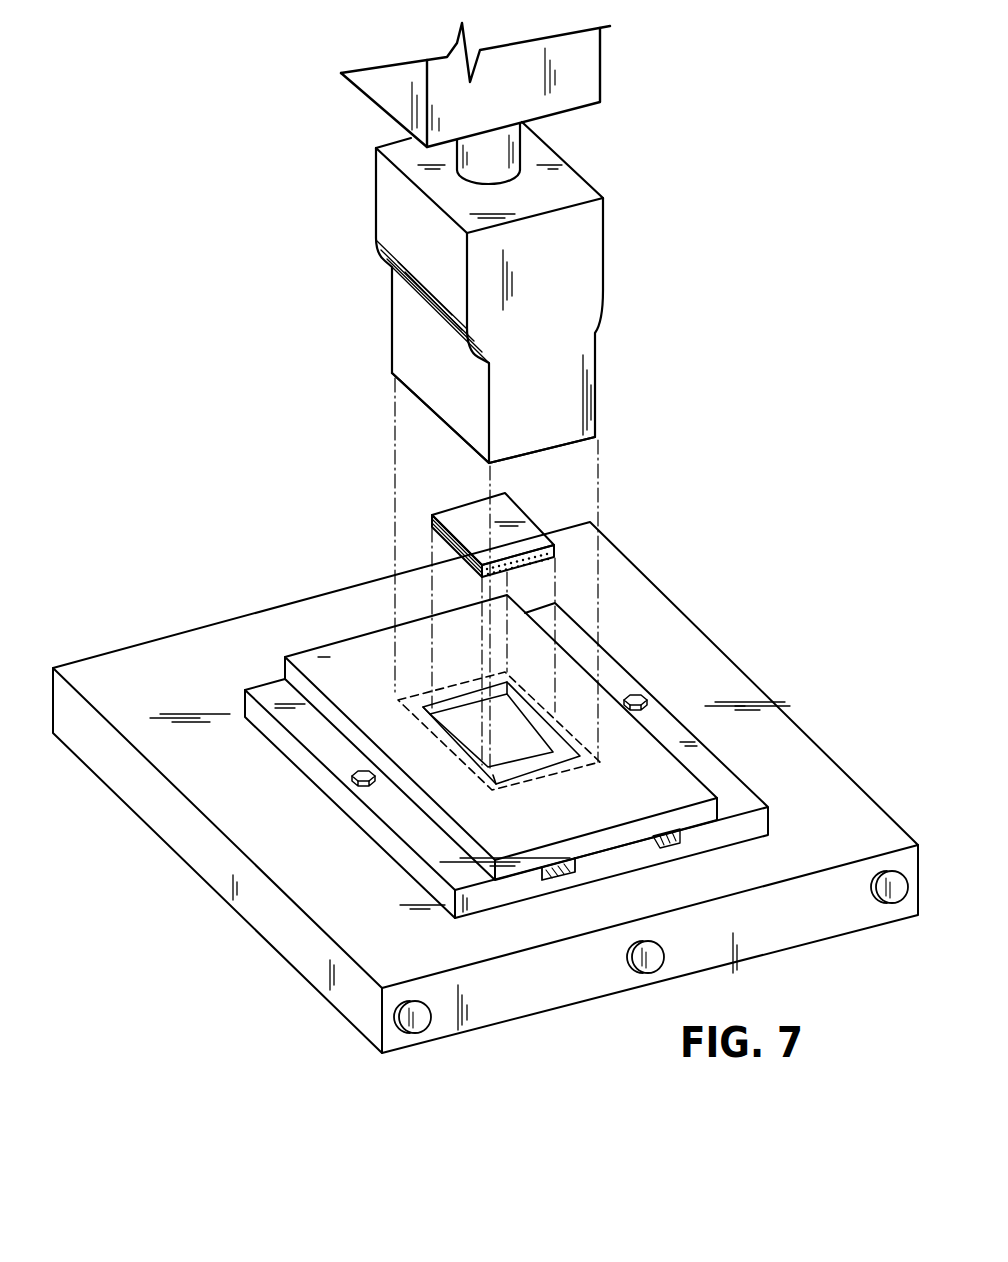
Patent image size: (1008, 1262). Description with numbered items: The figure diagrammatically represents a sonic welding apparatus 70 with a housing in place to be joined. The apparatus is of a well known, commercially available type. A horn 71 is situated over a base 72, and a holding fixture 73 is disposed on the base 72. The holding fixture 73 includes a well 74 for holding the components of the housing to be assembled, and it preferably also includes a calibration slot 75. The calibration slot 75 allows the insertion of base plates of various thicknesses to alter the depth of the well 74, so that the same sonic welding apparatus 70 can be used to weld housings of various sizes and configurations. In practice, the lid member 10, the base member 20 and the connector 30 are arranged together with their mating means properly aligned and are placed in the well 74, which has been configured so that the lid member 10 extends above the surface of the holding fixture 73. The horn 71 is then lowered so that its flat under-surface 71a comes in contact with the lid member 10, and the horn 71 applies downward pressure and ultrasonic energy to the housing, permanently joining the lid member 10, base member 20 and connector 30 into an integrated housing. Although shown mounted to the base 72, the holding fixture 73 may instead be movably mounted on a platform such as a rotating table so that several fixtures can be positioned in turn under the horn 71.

The sonic welding apparatus 70 is at (262, 482).
The horn 71 is at (575, 275).
The flat under-surface 71a is at (475, 453).
The lid member 10 is at (515, 489).
The base member 20 is at (545, 569).
The connector 30 is at (498, 572).
The base 72 is at (706, 593).
The holding fixture 73 is at (280, 694).
The well 74 is at (475, 723).
The calibration slot 75 is at (575, 866).